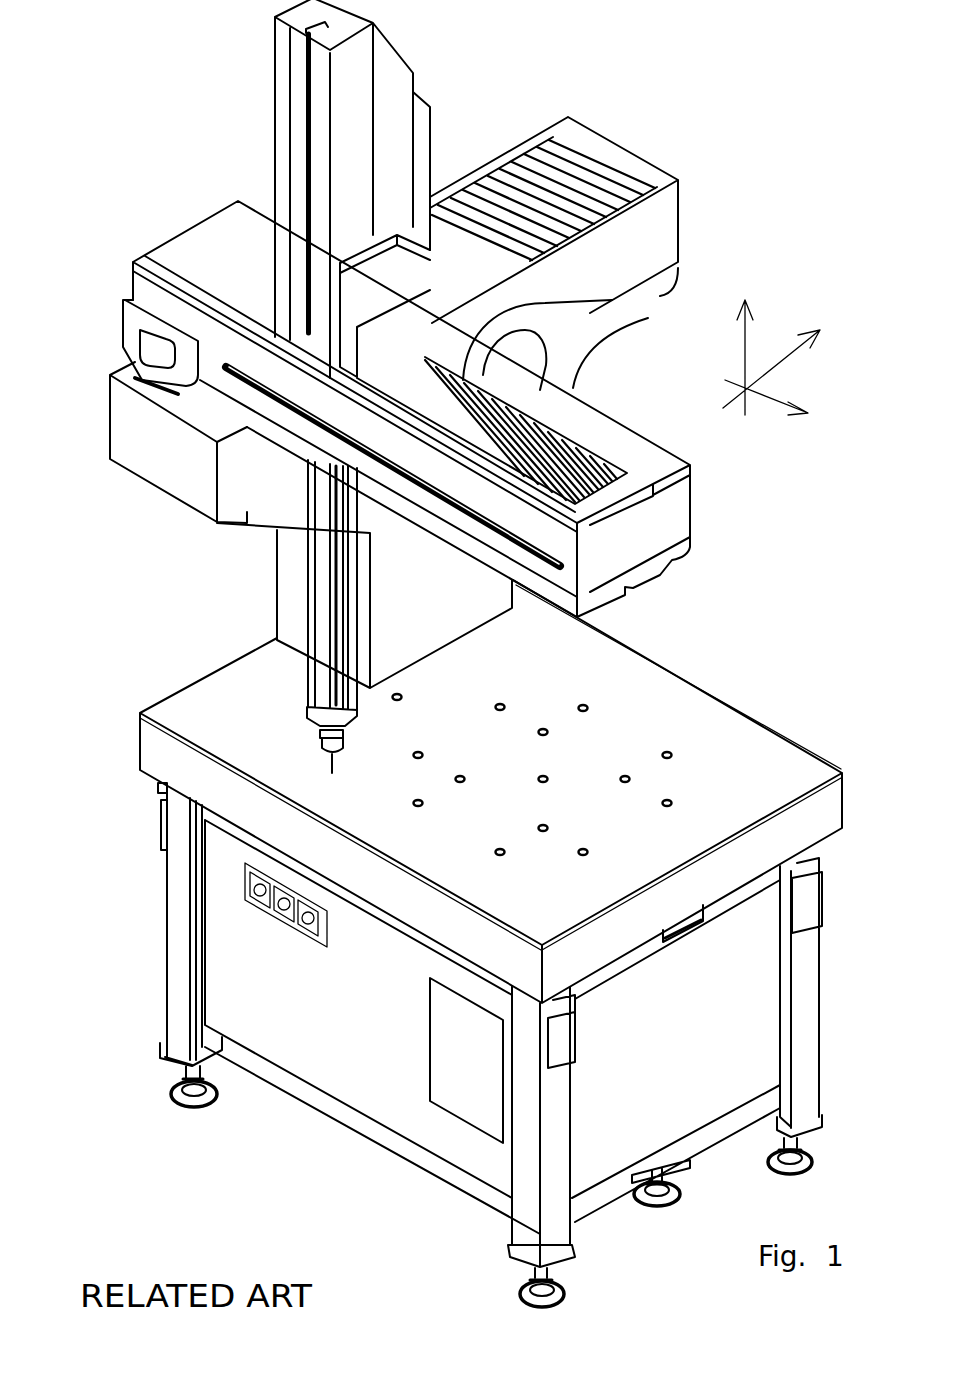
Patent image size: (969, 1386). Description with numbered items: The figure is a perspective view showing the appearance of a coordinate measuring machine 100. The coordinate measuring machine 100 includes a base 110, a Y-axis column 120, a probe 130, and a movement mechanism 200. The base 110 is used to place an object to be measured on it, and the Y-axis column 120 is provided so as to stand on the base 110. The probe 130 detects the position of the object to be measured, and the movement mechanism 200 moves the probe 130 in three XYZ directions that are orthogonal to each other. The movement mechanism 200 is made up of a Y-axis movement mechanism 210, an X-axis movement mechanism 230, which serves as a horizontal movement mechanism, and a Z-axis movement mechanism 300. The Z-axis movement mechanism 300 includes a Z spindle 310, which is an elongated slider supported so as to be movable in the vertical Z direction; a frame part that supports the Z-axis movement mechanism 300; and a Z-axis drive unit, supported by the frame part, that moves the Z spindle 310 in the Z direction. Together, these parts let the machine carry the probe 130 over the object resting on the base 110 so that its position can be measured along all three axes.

The coordinate measuring machine 100 is at (639, 93).
The base 110 is at (173, 712).
The Y-axis column 120 is at (287, 577).
The probe 130 is at (318, 733).
The movement mechanism 200 is at (180, 192).
The Y-axis movement mechanism 210 is at (118, 433).
The X-axis movement mechanism 230 is at (152, 290).
The Z-axis movement mechanism 300 is at (405, 90).
The Z spindle 310 is at (320, 640).